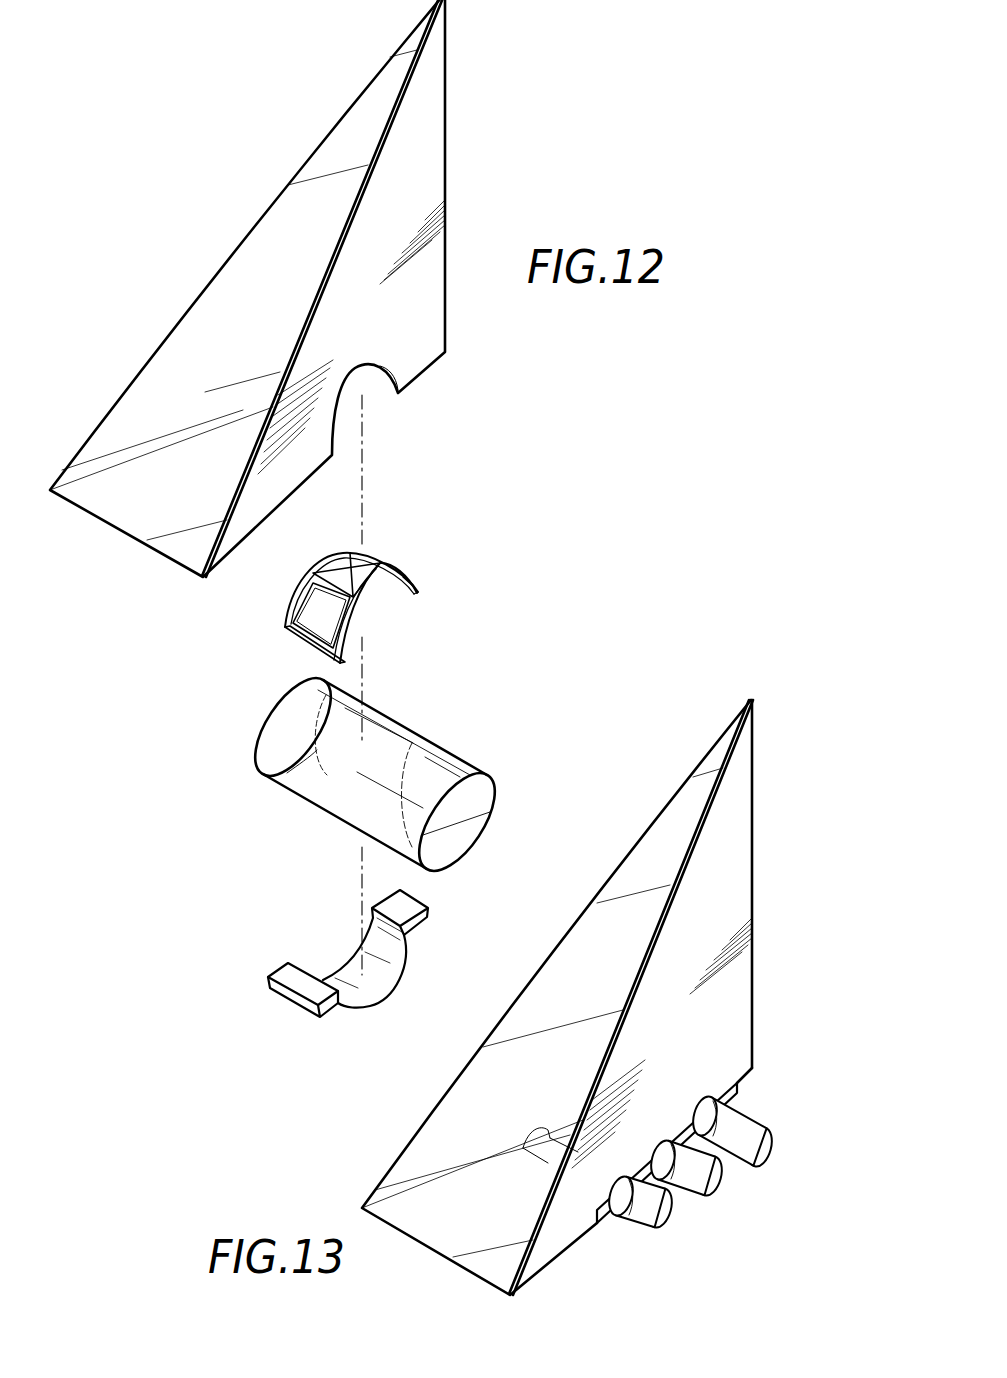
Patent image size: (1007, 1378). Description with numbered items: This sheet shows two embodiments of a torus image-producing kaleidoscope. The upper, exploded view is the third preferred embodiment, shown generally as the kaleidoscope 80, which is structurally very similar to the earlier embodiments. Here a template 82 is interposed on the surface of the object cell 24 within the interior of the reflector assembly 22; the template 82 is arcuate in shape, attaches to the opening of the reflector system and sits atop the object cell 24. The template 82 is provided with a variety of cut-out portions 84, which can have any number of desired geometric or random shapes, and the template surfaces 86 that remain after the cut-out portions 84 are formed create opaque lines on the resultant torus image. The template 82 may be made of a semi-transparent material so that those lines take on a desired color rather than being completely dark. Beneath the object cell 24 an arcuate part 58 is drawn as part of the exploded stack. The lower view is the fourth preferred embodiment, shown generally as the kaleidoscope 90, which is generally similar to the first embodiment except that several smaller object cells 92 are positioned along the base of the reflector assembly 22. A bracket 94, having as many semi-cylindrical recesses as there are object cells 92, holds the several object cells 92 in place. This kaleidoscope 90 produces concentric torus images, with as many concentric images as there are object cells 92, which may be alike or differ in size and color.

In FIG. 12, the torus image-producing kaleidoscope 80 is at (470, 128).
In FIG. 12, the template 82 is at (365, 607).
In FIG. 12, the cut-out portions 84 is at (318, 613).
In FIG. 12, the template surfaces 86 is at (347, 612).
In FIG. 12, the object cell 24 is at (492, 762).
In FIG. 12, the saddle clip 58 is at (435, 941).
In FIG. 13, the torus image-producing kaleidoscope 90 is at (606, 997).
In FIG. 13, the reflector assembly 22 is at (770, 978).
In FIG. 13, the object cells 92 is at (740, 1122).
In FIG. 13, the bracket 94 is at (720, 1150).